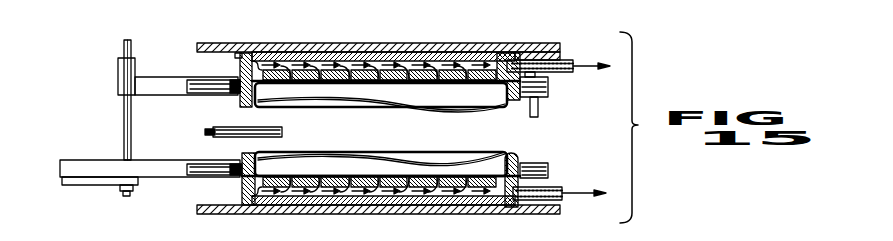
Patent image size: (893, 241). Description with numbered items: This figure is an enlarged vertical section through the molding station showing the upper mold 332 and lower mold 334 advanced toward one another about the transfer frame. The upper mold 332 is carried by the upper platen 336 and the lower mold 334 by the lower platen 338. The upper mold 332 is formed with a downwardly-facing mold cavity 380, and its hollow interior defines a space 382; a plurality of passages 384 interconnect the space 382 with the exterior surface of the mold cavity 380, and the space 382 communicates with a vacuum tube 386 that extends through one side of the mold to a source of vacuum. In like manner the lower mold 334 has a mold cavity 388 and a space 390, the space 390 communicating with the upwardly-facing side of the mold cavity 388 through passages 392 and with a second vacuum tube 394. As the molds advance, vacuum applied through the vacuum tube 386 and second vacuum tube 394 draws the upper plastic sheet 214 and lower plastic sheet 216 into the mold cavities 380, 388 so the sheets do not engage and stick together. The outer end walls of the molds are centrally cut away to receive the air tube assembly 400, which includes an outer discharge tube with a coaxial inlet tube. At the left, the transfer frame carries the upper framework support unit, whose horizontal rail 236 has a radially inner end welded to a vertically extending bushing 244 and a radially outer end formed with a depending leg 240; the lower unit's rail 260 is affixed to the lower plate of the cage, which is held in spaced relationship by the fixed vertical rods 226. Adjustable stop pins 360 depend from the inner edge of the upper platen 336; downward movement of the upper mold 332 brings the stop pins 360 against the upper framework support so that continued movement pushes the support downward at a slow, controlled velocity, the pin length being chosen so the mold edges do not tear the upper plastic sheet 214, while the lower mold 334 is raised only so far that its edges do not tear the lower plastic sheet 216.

The rod 226 is at (126, 42).
The bushing 244 is at (118, 72).
The rail 236 is at (197, 66).
The air tube assembly 400 is at (224, 127).
The rail 260 is at (188, 150).
The lower platen 338 is at (240, 215).
The upper mold 332 is at (250, 25).
The upper platen 336 is at (303, 22).
The passages 384 is at (368, 75).
The space 382 is at (453, 33).
The vacuum tube 386 is at (590, 38).
The stop pin 360 is at (547, 78).
The depending leg 240 is at (542, 109).
The mold cavity 380 is at (295, 84).
The upper plastic sheet 214 is at (456, 104).
The lower plastic sheet 216 is at (483, 163).
The mold cavity 388 is at (387, 142).
The passages 392 is at (451, 150).
The space 390 is at (458, 204).
The lower mold 334 is at (276, 203).
The second vacuum tube 394 is at (553, 187).